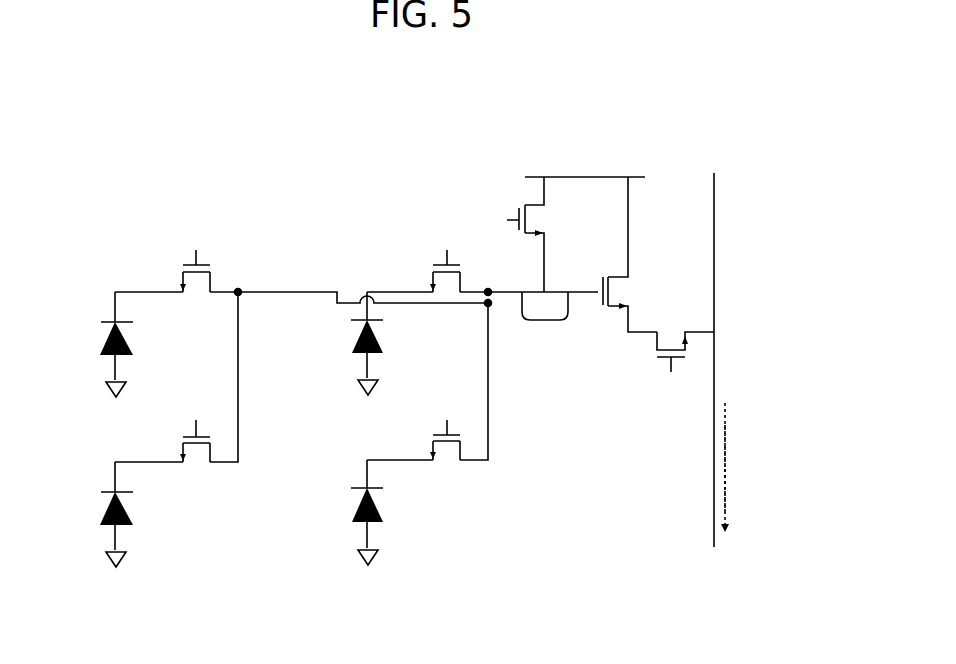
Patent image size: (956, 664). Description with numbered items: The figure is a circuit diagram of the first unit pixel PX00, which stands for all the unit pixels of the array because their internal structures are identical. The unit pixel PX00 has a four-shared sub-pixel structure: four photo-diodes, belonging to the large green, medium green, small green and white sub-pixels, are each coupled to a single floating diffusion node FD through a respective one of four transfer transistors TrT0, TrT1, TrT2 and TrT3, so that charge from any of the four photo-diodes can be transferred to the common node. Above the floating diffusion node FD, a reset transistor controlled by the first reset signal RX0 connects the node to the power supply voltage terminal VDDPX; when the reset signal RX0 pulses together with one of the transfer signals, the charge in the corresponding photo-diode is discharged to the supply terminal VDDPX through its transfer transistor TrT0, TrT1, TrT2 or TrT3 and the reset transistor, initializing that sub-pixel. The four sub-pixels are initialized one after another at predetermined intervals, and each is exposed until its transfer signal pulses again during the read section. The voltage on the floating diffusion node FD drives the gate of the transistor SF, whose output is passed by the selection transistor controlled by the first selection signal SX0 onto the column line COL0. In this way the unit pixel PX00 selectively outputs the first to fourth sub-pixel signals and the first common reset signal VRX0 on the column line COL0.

The first unit pixel PX00 is at (198, 156).
The first transfer transistor TrT0 is at (174, 278).
The second transfer transistor TrT1 is at (425, 278).
The third transfer transistor TrT2 is at (425, 447).
The fourth transfer transistor TrT3 is at (174, 448).
The power supply voltage terminal VDDPX is at (585, 163).
The first reset signal RX0 is at (513, 234).
The floating diffusion node FD is at (545, 306).
The source follower transistor SF is at (630, 254).
The first selection signal SX0 is at (685, 366).
The column line COL0 is at (715, 375).
The first common reset signal VRX0 is at (752, 504).